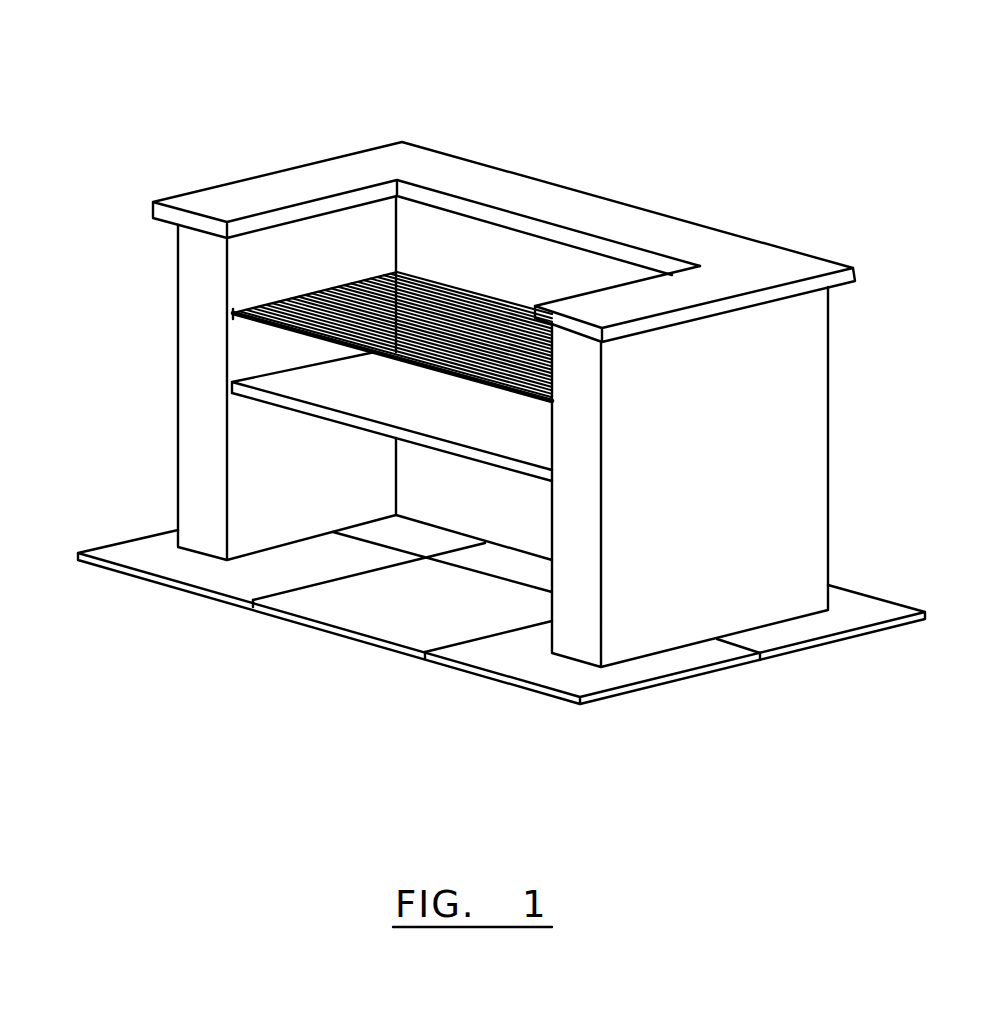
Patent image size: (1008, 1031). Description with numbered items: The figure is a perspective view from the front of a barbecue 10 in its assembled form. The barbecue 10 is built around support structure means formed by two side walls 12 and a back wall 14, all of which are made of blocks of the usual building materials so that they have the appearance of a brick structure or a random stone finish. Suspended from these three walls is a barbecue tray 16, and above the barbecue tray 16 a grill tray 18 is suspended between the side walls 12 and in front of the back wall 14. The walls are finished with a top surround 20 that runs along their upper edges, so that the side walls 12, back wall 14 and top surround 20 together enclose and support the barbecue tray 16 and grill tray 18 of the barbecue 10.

The barbecue 10 is at (660, 196).
The side walls 12 is at (192, 482).
The back wall 14 is at (467, 252).
The barbecue tray 16 is at (243, 382).
The grill tray 18 is at (246, 310).
The top surround 20 is at (780, 266).